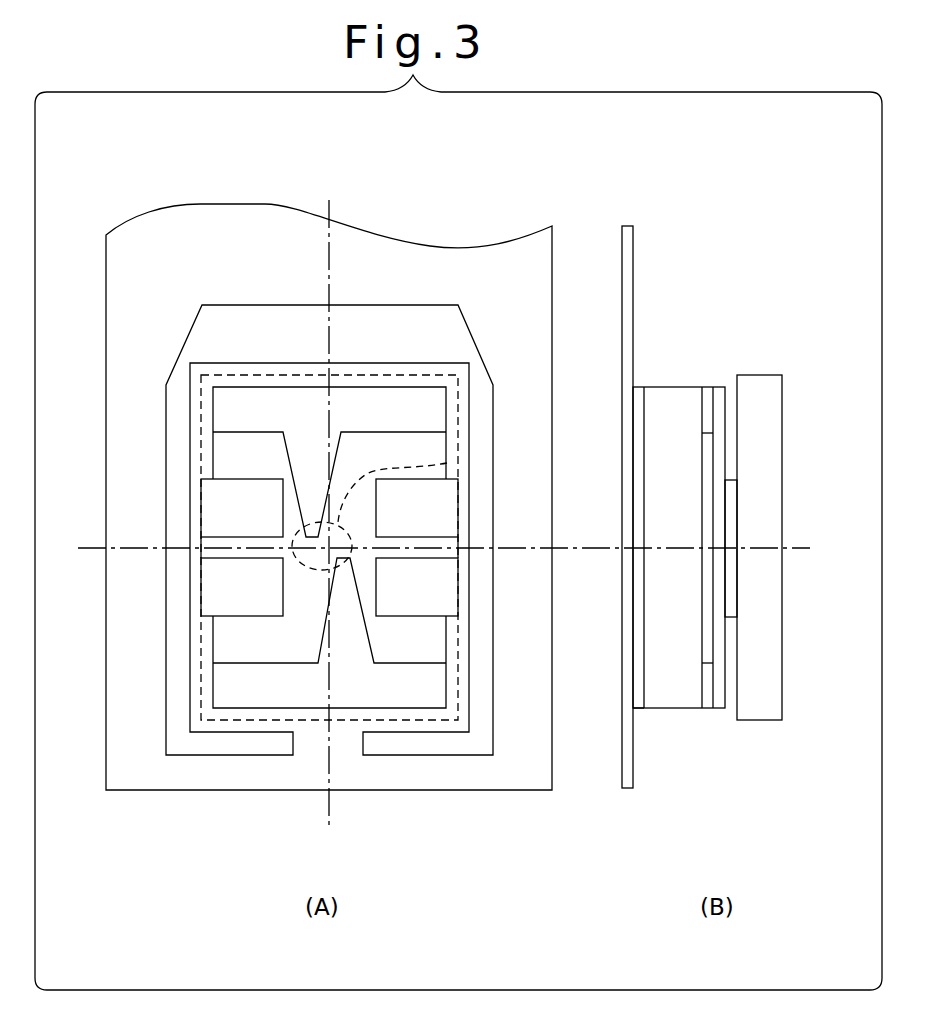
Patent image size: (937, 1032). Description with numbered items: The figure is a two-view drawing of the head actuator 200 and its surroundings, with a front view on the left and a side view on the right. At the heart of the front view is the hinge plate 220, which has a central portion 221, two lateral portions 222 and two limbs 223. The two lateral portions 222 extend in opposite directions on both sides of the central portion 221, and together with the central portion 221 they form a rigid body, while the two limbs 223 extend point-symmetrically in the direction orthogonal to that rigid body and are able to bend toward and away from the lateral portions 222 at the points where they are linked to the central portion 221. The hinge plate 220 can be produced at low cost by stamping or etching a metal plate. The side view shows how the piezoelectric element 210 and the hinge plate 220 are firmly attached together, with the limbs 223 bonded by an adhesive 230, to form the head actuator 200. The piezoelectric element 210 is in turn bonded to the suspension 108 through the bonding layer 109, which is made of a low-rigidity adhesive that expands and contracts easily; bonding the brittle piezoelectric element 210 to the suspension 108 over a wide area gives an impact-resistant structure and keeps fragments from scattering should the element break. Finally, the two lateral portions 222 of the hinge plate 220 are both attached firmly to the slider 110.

The suspension 108 is at (137, 722).
The bonding layer 109 is at (637, 712).
The slider 110 is at (200, 447).
The head actuator 200 is at (725, 367).
The piezoelectric element 210 is at (672, 695).
The hinge plate 220 is at (717, 710).
The central portion 221 is at (447, 463).
The lateral portions 222 is at (218, 577).
The limbs 223 is at (428, 409).
The adhesive 230 is at (707, 708).